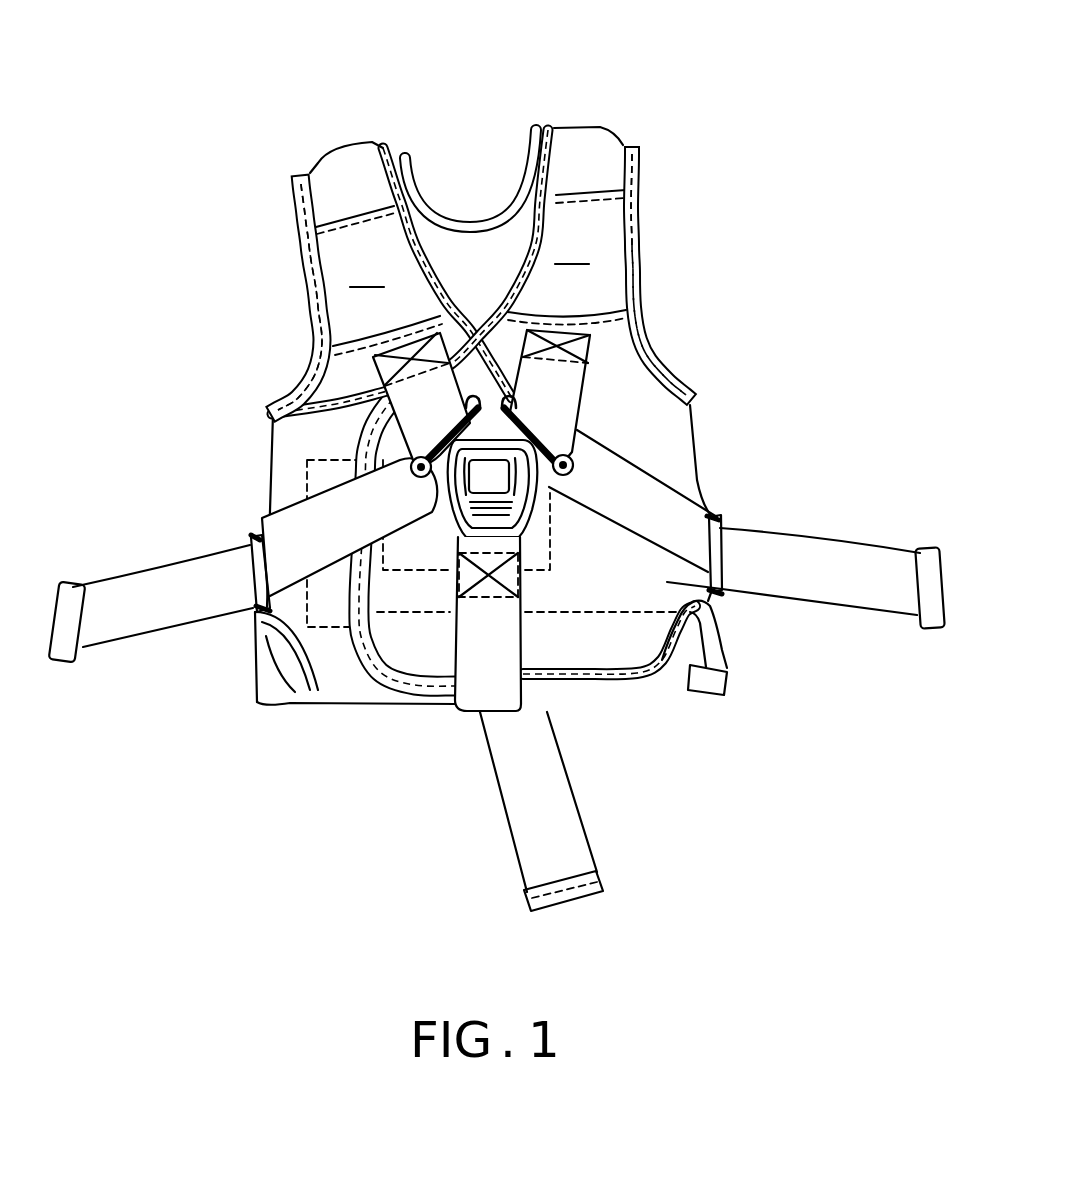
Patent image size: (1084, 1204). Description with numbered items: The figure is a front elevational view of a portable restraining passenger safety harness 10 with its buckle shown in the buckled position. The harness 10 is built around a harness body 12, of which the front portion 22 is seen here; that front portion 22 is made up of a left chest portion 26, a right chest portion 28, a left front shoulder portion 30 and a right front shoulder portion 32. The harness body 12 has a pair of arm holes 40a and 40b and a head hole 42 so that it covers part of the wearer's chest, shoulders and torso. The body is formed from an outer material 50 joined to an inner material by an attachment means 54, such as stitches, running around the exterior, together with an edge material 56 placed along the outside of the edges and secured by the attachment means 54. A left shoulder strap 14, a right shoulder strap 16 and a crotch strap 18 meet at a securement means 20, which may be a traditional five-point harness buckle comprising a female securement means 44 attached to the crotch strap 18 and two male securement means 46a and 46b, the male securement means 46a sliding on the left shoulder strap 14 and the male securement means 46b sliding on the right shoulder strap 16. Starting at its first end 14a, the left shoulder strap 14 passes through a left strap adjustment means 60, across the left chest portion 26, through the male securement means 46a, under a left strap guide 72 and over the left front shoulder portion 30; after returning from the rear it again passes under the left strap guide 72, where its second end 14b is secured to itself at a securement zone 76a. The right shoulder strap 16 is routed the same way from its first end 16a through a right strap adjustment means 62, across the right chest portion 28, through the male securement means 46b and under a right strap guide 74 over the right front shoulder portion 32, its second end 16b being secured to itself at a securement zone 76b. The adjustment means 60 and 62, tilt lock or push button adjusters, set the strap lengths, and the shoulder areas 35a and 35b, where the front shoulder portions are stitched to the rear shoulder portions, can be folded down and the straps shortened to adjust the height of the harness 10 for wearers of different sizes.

The harness 10 is at (178, 103).
The harness body 12 is at (673, 433).
The left shoulder strap 14 is at (815, 560).
The first end of left shoulder strap 14a is at (940, 598).
The second end of left shoulder strap 14b is at (589, 345).
The right shoulder strap 16 is at (175, 583).
The first end of right shoulder strap 16a is at (63, 630).
The second end of right shoulder strap 16b is at (372, 356).
The crotch strap 18 is at (452, 700).
The securement means 20 is at (535, 503).
The front portion 22 is at (268, 458).
The left chest portion 26 is at (640, 682).
The right chest portion 28 is at (330, 673).
The left front shoulder portion 30 is at (642, 168).
The right front shoulder portion 32 is at (296, 204).
The shoulder area 35a is at (612, 119).
The shoulder area 35b is at (330, 136).
The arm hole 40a is at (660, 262).
The arm hole 40b is at (290, 313).
The head hole 42 is at (468, 188).
The female securement means 44 is at (455, 497).
The male securement means 46a is at (574, 459).
The male securement means 46b is at (410, 460).
The outer material 50 is at (705, 592).
The attachment means 54 is at (306, 396).
The edge material 56 is at (302, 276).
The left strap adjustment means 60 is at (722, 517).
The right strap adjustment means 62 is at (245, 540).
The left strap guide 72 is at (449, 272).
The right strap guide 74 is at (414, 273).
The securement zone 76a is at (626, 303).
The securement zone 76b is at (268, 412).